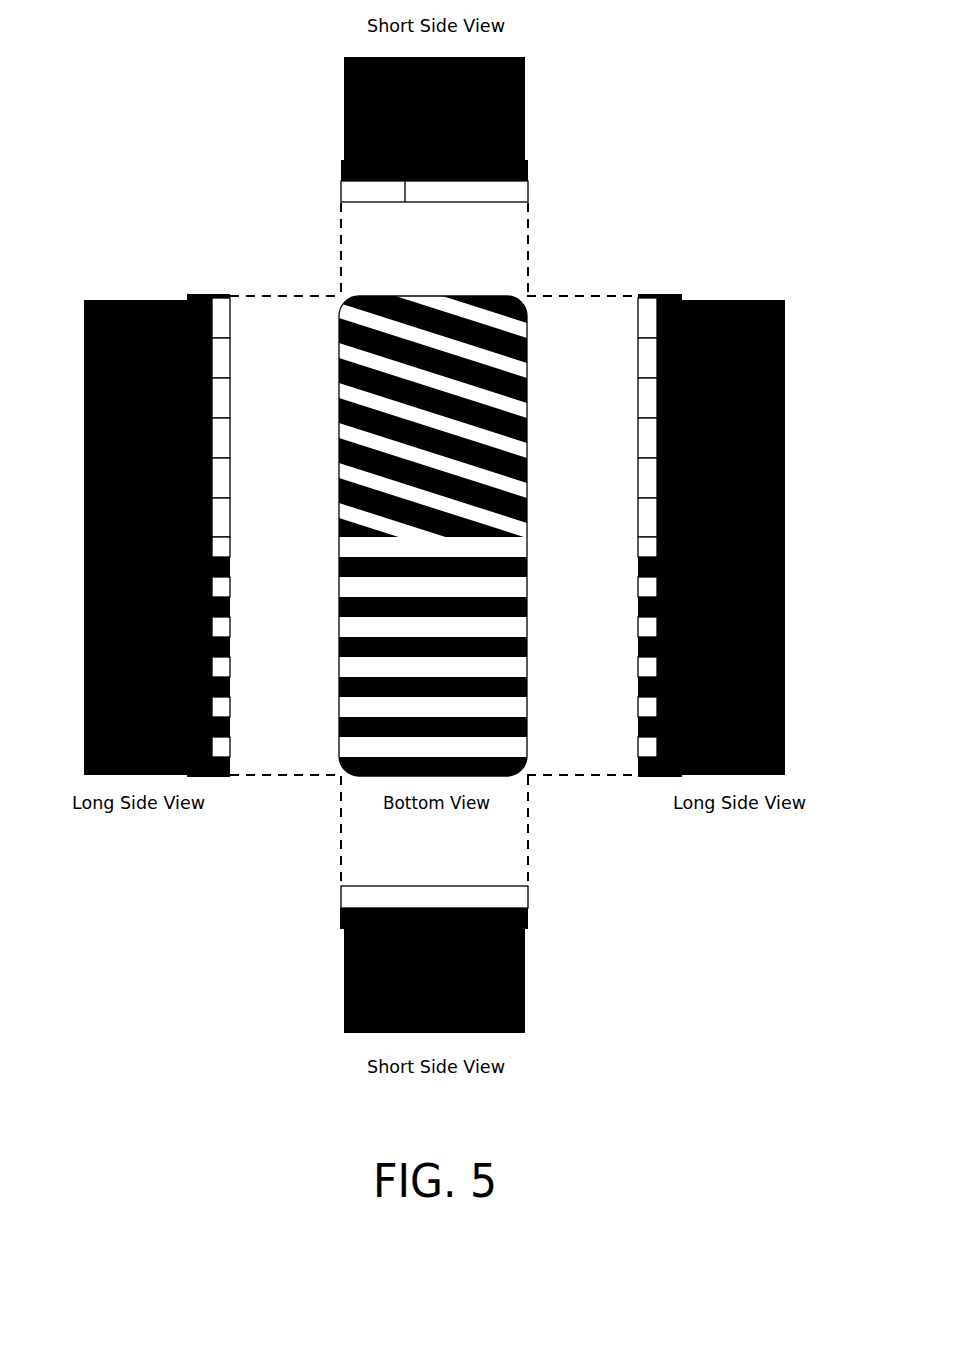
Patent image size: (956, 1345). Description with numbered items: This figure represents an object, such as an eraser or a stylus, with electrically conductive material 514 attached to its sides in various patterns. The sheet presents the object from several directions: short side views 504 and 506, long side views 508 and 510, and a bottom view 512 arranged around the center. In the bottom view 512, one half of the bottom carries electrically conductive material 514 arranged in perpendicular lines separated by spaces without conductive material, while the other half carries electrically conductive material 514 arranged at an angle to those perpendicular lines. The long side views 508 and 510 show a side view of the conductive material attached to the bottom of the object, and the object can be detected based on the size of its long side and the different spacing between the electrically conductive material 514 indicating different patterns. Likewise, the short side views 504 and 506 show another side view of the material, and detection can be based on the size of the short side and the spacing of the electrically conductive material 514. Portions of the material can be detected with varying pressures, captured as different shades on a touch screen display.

The short side view 504 is at (528, 110).
The short side view 506 is at (527, 985).
The long side view 508 is at (152, 298).
The long side view 510 is at (700, 300).
The bottom view 512 is at (385, 297).
The electrically conductive material 514 is at (487, 203).